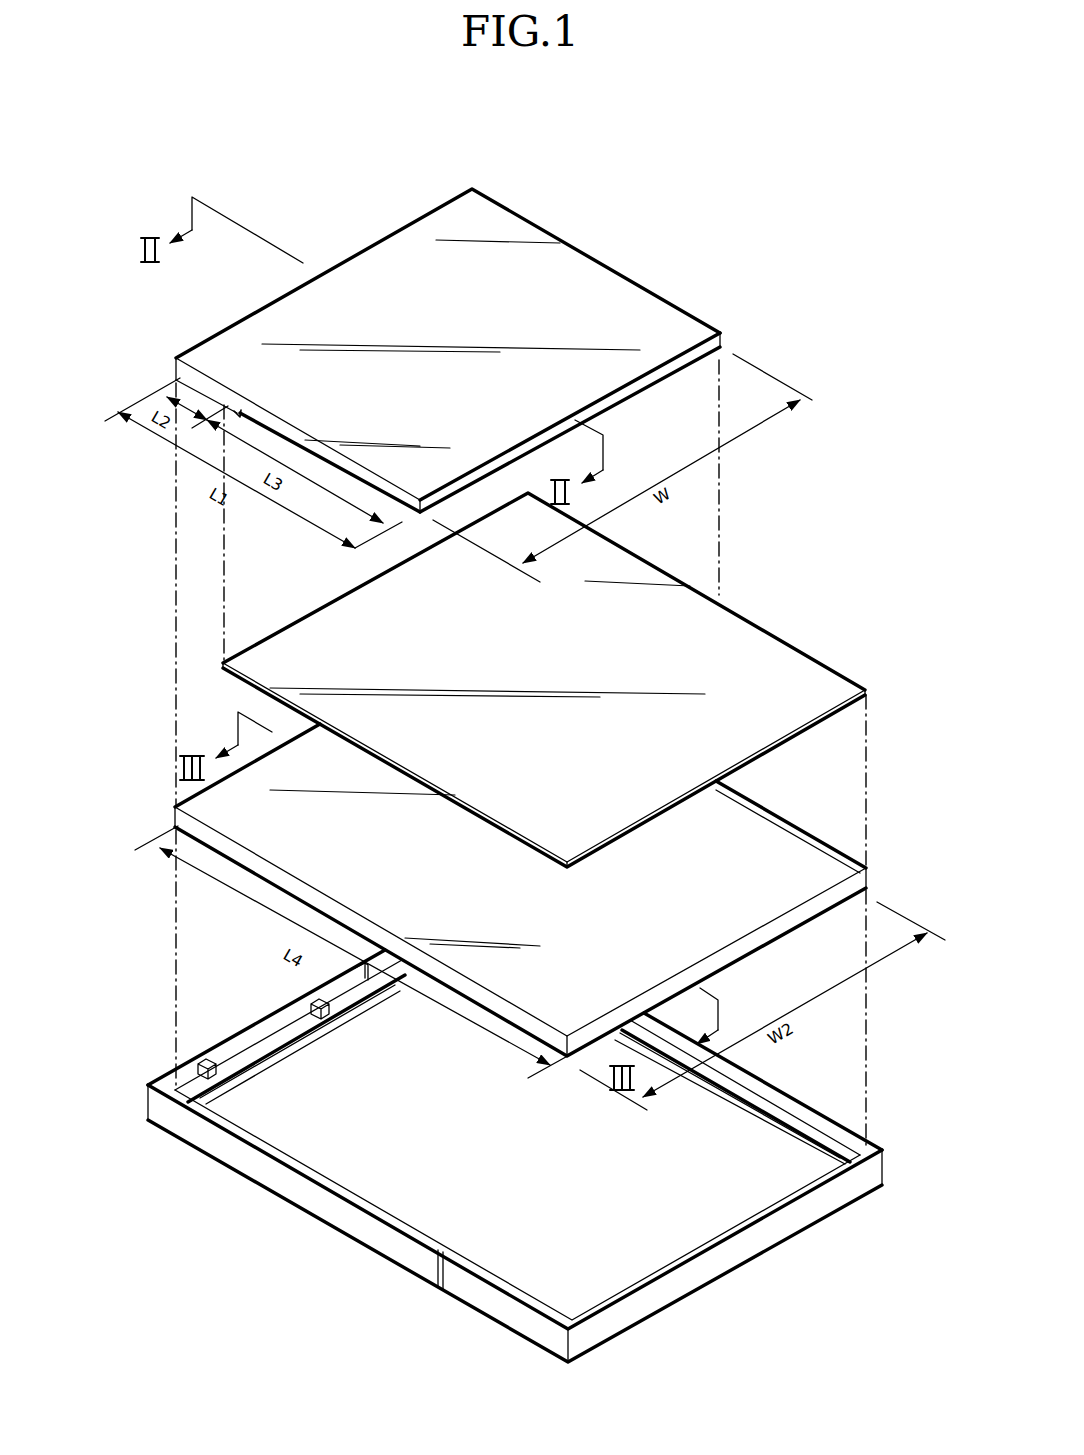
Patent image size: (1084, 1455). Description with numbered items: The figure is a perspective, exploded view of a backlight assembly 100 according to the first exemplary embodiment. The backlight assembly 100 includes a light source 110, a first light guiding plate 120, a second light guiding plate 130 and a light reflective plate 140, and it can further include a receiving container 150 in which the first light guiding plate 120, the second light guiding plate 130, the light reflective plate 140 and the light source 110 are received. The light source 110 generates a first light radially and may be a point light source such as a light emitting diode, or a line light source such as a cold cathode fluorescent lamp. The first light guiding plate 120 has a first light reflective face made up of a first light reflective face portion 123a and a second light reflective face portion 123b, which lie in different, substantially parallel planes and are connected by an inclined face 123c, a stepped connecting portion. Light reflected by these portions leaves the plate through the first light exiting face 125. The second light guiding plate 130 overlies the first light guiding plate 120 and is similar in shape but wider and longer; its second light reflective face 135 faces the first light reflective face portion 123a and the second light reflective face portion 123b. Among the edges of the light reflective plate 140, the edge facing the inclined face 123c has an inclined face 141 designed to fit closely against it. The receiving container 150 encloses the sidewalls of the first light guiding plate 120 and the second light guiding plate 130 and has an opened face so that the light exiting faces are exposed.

The backlight assembly 100 is at (812, 282).
The light source 110 is at (207, 1067).
The first light guiding plate 120 is at (402, 358).
The first light reflective face portion 123a is at (172, 384).
The second light reflective face portion 123b is at (362, 480).
The inclined face 123c is at (237, 413).
The first light exiting face 125 is at (591, 272).
The second light guiding plate 130 is at (553, 890).
The second light reflective face 135 is at (815, 853).
The light reflective plate 140 is at (509, 680).
The inclined face 141 is at (252, 645).
The receiving container 150 is at (492, 1156).